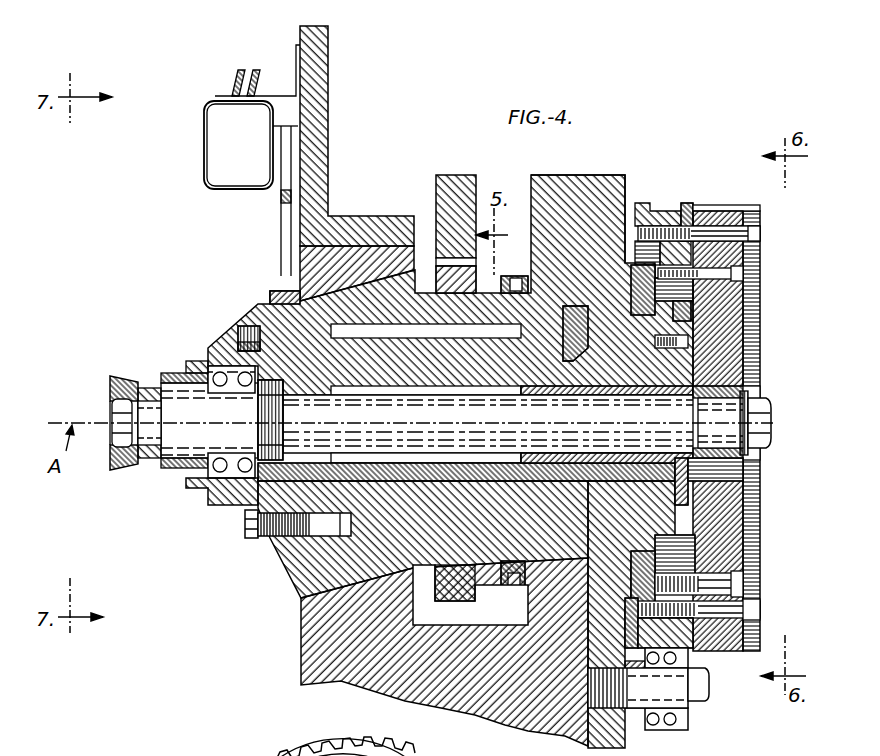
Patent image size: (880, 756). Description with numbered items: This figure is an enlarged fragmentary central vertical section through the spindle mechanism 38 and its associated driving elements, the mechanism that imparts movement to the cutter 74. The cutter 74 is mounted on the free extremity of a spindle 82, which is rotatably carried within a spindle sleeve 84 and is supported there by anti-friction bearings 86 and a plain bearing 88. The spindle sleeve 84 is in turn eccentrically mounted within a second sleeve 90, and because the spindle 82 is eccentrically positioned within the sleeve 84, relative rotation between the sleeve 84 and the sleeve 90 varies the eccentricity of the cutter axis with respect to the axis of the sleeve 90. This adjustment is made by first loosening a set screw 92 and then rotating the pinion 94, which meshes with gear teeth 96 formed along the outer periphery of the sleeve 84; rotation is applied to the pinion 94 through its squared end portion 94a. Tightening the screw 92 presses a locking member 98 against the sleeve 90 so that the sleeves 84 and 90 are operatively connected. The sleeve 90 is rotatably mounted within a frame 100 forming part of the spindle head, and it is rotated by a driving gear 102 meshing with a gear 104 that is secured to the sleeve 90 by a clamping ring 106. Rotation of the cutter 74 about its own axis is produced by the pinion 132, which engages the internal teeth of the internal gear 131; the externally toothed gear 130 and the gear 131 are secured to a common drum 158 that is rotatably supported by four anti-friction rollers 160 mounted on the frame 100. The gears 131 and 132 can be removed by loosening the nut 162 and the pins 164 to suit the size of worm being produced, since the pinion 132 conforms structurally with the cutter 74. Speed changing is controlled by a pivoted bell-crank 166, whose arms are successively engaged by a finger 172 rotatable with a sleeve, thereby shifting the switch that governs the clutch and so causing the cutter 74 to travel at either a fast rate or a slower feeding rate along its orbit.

The spindle mechanism 38 is at (227, 310).
The cutter 74 is at (107, 381).
The spindle 82 is at (429, 420).
The spindle sleeve 84 is at (212, 490).
The anti-friction bearings 86 is at (210, 463).
The plain bearing 88 is at (638, 450).
The second sleeve 90 is at (290, 572).
The set screw 92 is at (230, 330).
The pinion 94 is at (258, 533).
The squared end portion 94a is at (243, 530).
The gear teeth 96 is at (264, 284).
The locking member 98 is at (558, 312).
The frame 100 is at (312, 641).
The driving gear 102 is at (447, 172).
The gear 104 is at (455, 585).
The clamping ring 106 is at (513, 270).
The gear 130 is at (747, 210).
The internal gear 131 is at (717, 339).
The pinion 132 is at (722, 383).
The drum 158 is at (657, 207).
The anti-friction rollers 160 is at (657, 723).
The nut 162 is at (762, 417).
The pins 164 is at (740, 266).
The bell-crank 166 is at (282, 143).
The finger 172 is at (282, 216).